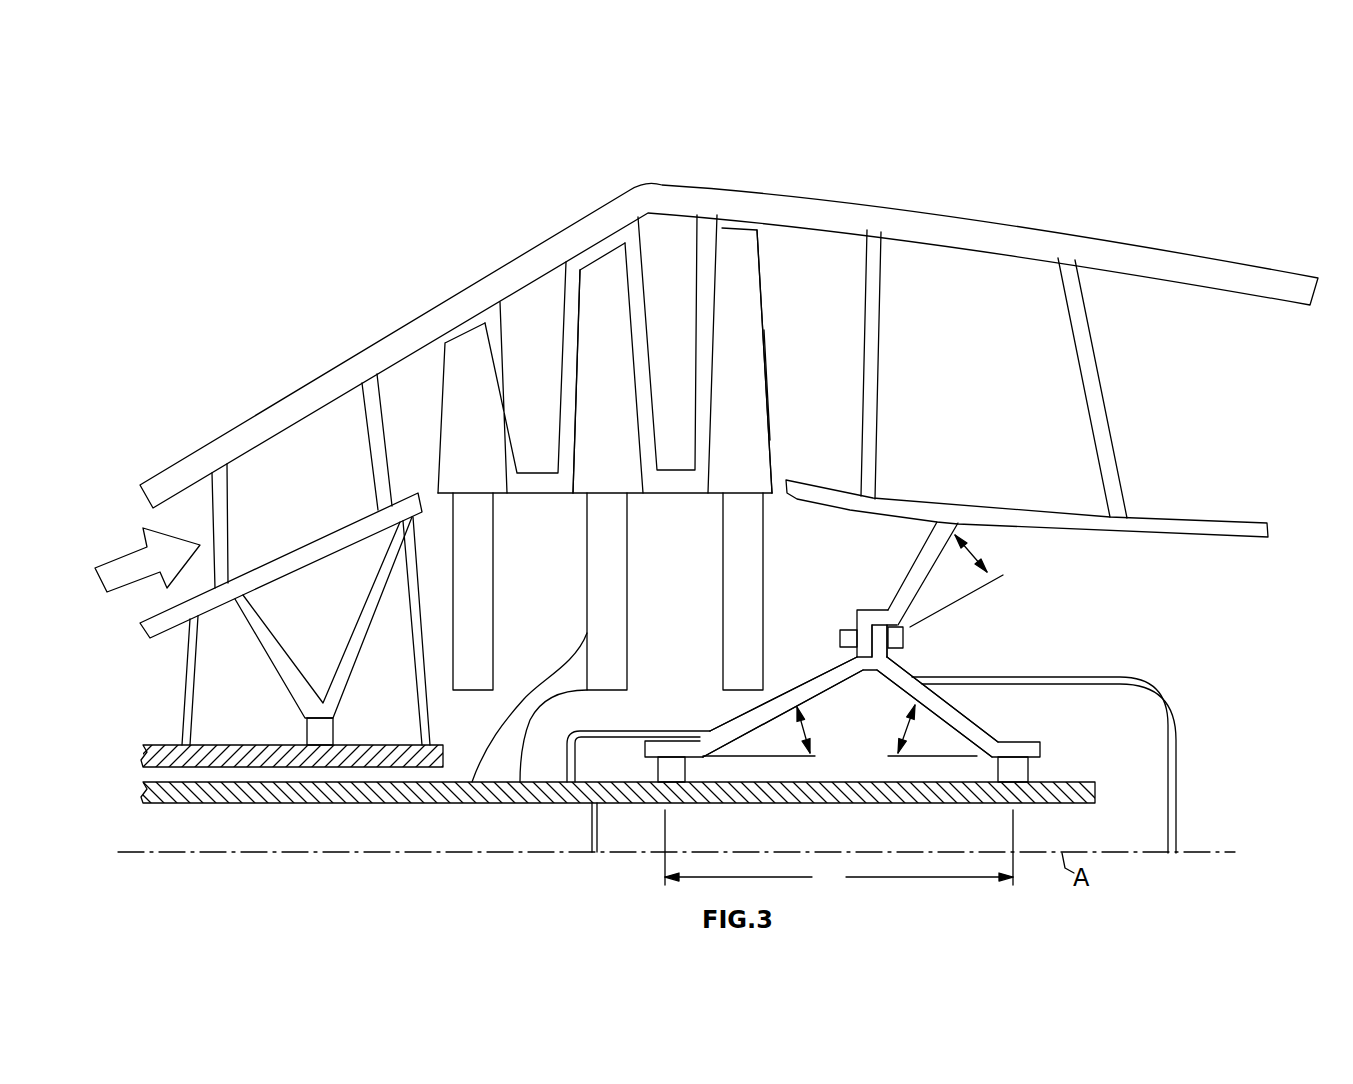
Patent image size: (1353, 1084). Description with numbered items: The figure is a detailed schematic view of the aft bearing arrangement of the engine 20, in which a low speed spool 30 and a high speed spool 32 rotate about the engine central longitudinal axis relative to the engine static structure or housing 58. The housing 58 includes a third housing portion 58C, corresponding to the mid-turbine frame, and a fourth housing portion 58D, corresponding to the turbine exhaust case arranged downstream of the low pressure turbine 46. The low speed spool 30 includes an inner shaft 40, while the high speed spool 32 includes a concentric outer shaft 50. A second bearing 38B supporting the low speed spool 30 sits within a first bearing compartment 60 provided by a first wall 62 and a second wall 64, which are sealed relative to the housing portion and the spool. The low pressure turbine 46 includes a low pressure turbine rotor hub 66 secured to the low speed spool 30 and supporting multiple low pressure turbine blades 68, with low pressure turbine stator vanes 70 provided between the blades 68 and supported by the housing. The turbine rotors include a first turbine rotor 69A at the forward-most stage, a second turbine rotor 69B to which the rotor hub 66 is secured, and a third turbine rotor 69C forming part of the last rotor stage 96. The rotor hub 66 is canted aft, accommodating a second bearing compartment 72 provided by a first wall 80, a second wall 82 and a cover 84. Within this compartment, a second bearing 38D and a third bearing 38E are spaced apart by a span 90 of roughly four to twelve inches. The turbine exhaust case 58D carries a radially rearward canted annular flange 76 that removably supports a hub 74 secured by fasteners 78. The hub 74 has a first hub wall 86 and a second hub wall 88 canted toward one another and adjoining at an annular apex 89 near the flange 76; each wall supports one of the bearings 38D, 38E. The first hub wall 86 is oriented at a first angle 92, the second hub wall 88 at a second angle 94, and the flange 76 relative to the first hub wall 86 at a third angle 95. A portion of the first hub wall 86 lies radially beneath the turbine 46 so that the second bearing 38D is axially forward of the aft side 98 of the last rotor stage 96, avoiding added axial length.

The engine 20 is at (793, 141).
The low speed spool 30 is at (394, 812).
The high speed spool 32 is at (286, 775).
The second bearing 38B is at (326, 733).
The second bearing 38D is at (663, 778).
The third bearing 38E is at (1015, 771).
The inner shaft 40 is at (880, 805).
The low pressure turbine 46 is at (770, 135).
The outer shaft 50 is at (157, 757).
The engine static structure or housing 58 is at (1171, 245).
The third housing portion 58C is at (333, 492).
The fourth housing portion 58D is at (995, 386).
The first bearing compartment 60 is at (250, 714).
The first wall 62 is at (187, 685).
The second wall 64 is at (428, 719).
The low pressure turbine rotor hub 66 is at (544, 698).
The low pressure turbine blades 68 is at (465, 350).
The first turbine rotor 69A is at (478, 598).
The second turbine rotor 69B is at (620, 578).
The third turbine rotor 69C is at (748, 546).
The low pressure turbine stator vanes 70 is at (546, 369).
The second bearing compartment 72 is at (1098, 727).
The hub 74 is at (829, 650).
The annular flange 76 is at (906, 581).
The fasteners 78 is at (903, 645).
The first wall 80 is at (682, 728).
The second wall 82 is at (590, 828).
The cover 84 is at (1178, 770).
The first hub wall 86 is at (820, 670).
The second hub wall 88 is at (970, 715).
The annular apex 89 is at (893, 663).
The span 90 is at (839, 851).
The first angle 92 is at (807, 730).
The second angle 94 is at (897, 727).
The third angle 95 is at (990, 568).
The last rotor stage 96 is at (770, 282).
The aft side 98 is at (768, 347).